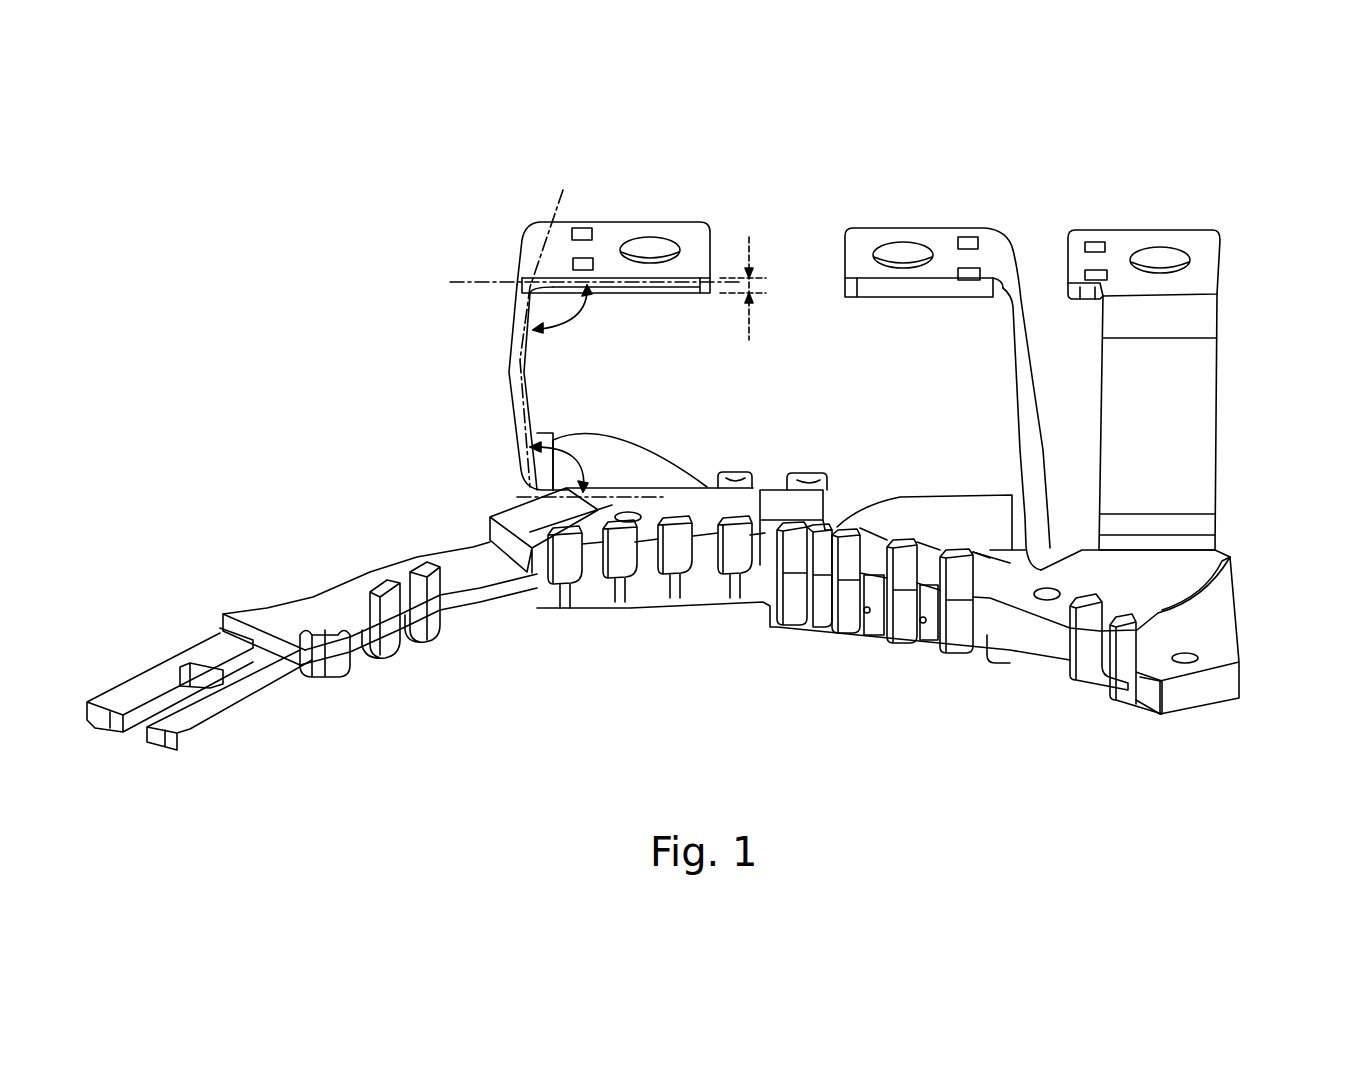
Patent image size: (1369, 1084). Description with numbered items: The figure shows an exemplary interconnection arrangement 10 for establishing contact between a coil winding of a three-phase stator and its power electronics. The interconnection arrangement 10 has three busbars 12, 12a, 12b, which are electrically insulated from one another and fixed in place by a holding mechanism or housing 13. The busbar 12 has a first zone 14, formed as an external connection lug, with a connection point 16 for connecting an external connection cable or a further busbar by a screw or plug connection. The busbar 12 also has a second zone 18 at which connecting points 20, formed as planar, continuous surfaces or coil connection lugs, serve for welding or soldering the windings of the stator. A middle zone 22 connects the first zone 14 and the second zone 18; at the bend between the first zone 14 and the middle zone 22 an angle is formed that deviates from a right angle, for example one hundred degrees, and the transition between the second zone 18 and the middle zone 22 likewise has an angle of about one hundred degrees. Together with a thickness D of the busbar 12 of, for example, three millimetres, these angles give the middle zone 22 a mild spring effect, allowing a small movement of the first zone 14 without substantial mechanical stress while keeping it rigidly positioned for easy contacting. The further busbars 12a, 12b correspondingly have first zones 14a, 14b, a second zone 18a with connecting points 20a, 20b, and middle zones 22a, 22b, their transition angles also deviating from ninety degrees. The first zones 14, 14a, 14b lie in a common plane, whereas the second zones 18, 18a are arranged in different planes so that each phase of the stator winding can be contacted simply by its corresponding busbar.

The interconnection arrangement 10 is at (305, 225).
The busbar 12 is at (583, 222).
The busbar 12a is at (978, 230).
The busbar 12b is at (1210, 228).
The housing 13 is at (530, 520).
The first zone 14 is at (690, 235).
The first zone 14a is at (860, 236).
The first zone 14b is at (1207, 267).
The connection point 16 is at (650, 243).
The second zone 18 is at (637, 468).
The second zone 18a is at (943, 507).
The connecting points 20 is at (567, 550).
The connecting points 20a is at (847, 550).
The connecting points 20b is at (1115, 651).
The middle zone 22 is at (513, 300).
The middle zone 22a is at (1022, 375).
The middle zone 22b is at (1175, 400).
The thickness D is at (767, 288).